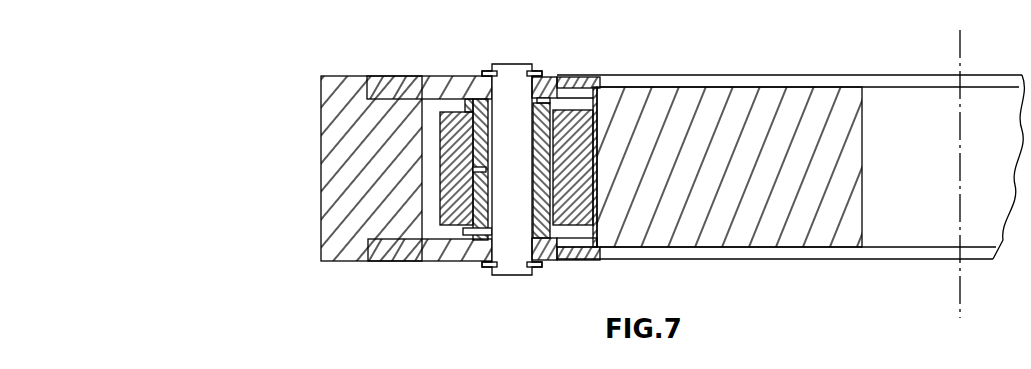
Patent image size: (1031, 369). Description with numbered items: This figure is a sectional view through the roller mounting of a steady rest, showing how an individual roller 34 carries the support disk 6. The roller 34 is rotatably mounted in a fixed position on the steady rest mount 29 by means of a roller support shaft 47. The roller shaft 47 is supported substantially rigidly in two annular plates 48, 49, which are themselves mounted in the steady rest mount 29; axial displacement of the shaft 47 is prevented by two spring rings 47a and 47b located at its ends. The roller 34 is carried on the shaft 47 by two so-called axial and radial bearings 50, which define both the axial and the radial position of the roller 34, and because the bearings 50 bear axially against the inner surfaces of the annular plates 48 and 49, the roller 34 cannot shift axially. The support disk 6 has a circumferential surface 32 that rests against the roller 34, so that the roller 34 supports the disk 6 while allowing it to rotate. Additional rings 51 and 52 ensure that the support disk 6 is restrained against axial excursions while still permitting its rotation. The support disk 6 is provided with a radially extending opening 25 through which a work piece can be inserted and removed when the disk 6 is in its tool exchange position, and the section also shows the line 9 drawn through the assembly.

The steady rest mount 29 is at (334, 92).
The annular plate 49 is at (386, 85).
The annular plate 48 is at (383, 252).
The axial and radial bearings 50 is at (477, 97).
The roller support shaft 47 is at (510, 270).
The spring ring 47a is at (537, 265).
The spring ring 47b is at (538, 75).
The ring 52 is at (592, 85).
The roller 34 is at (569, 120).
The ring 51 is at (590, 260).
The circumferential surface 32 is at (597, 142).
The support disk 6 is at (727, 95).
The opening 25 is at (903, 105).
The center axis 9 is at (962, 295).